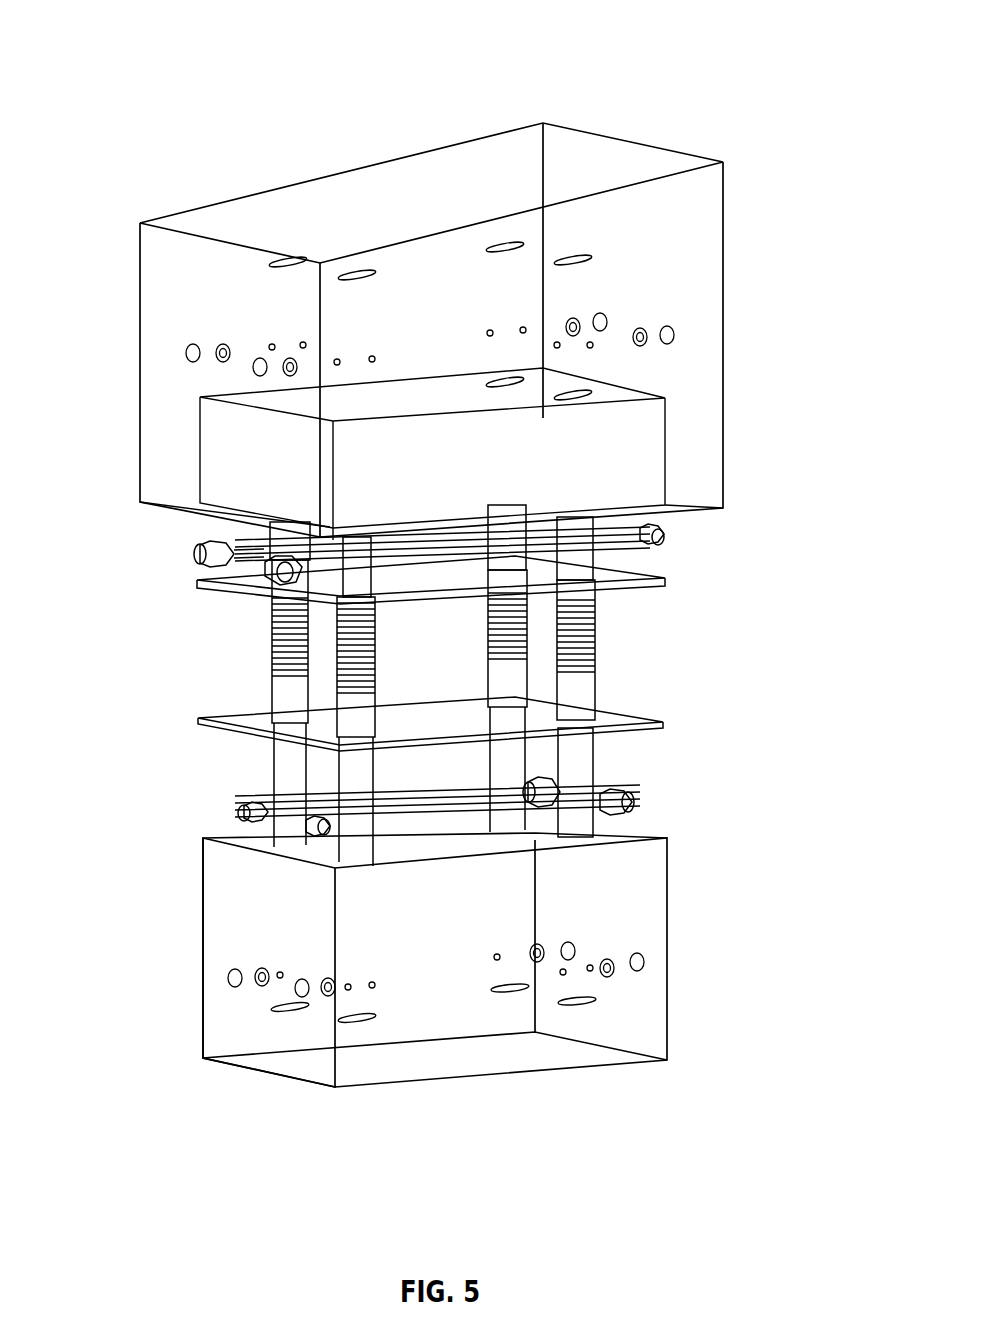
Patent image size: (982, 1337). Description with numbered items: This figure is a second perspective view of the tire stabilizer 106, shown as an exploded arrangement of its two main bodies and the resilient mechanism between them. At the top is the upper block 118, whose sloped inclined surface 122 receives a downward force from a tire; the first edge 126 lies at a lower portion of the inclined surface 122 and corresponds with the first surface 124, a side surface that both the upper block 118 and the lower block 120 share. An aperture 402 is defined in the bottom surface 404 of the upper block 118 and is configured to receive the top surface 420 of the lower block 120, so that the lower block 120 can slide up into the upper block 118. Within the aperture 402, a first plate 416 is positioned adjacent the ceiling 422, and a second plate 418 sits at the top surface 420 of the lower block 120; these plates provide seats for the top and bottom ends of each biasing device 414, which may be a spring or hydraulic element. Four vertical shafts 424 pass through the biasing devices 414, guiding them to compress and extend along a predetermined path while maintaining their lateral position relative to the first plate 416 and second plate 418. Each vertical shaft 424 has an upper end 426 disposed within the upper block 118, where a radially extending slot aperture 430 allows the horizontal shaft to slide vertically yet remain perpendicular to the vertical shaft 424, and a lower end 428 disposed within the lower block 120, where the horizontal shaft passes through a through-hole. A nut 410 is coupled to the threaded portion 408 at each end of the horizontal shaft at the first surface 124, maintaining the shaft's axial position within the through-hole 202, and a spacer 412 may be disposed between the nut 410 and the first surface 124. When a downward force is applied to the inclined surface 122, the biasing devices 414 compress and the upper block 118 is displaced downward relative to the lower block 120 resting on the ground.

The tire stabilizer 106 is at (708, 62).
The inclined surface 122 is at (398, 201).
The first edge 126 is at (208, 238).
The first surface 124 is at (190, 293).
The upper block 118 is at (650, 230).
The through-hole 202 is at (190, 354).
The aperture 402 is at (627, 436).
The bottom surface 404 is at (691, 515).
The ceiling 422 is at (433, 410).
The upper end 426 is at (576, 530).
The nut 410 is at (207, 548).
The spacer 412 is at (225, 560).
The threaded portion 408 is at (275, 572).
The biasing device 414 is at (295, 647).
The vertical shaft 424 is at (357, 665).
The slot aperture 430 is at (565, 608).
The first plate 416 is at (497, 580).
The lower end 428 is at (553, 835).
The second plate 418 is at (507, 719).
The top surface 420 is at (408, 838).
The lower block 120 is at (497, 915).